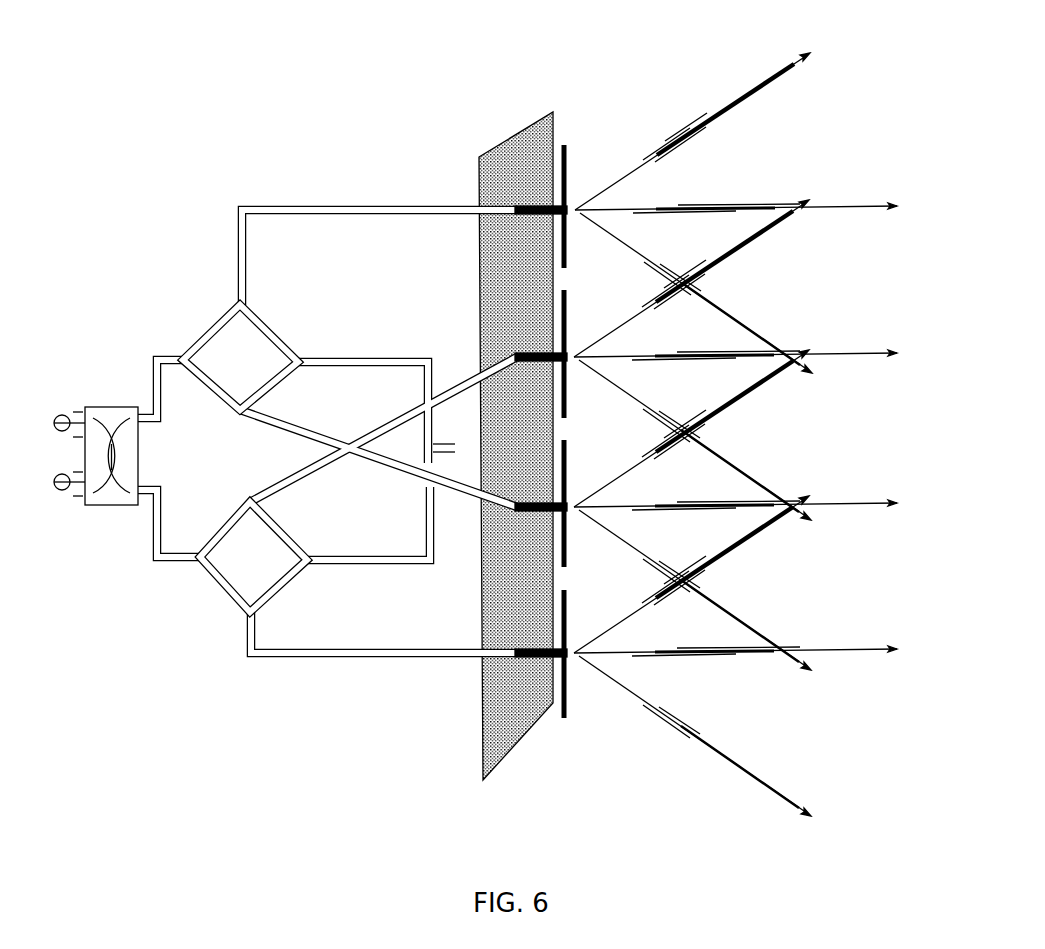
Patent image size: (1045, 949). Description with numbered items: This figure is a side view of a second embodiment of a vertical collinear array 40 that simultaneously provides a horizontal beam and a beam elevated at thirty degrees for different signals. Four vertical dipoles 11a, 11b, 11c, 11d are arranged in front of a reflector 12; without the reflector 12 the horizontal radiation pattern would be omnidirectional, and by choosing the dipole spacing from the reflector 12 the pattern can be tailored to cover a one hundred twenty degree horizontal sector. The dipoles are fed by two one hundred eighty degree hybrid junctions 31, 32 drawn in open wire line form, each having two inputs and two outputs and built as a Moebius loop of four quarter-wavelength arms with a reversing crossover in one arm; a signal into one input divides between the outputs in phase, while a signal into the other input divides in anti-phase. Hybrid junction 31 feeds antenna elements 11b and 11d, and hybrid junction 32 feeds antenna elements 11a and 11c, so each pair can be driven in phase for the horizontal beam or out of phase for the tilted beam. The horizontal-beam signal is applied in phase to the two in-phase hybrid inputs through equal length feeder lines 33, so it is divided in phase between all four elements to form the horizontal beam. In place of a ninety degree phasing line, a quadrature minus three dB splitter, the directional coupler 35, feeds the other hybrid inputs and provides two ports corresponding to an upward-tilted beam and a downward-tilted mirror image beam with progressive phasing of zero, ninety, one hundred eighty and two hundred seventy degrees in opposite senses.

The vertical collinear array 40 is at (571, 74).
The reflector 12 is at (515, 748).
The vertical dipole 11a is at (569, 258).
The vertical dipole 11b is at (571, 407).
The vertical dipole 11c is at (571, 557).
The vertical dipole 11d is at (573, 706).
The hybrid junction 31 is at (254, 557).
The hybrid junction 32 is at (246, 358).
The feeder line 33 is at (350, 358).
The directional coupler 35 is at (137, 475).